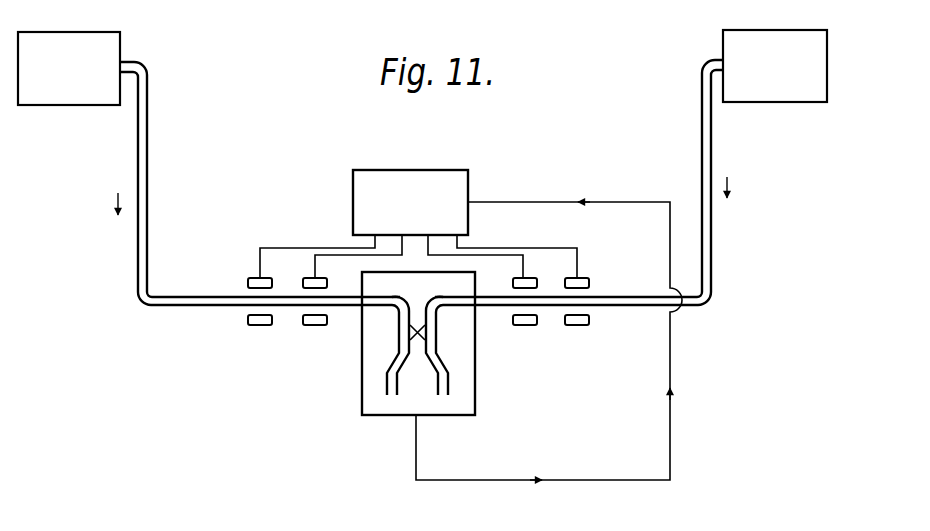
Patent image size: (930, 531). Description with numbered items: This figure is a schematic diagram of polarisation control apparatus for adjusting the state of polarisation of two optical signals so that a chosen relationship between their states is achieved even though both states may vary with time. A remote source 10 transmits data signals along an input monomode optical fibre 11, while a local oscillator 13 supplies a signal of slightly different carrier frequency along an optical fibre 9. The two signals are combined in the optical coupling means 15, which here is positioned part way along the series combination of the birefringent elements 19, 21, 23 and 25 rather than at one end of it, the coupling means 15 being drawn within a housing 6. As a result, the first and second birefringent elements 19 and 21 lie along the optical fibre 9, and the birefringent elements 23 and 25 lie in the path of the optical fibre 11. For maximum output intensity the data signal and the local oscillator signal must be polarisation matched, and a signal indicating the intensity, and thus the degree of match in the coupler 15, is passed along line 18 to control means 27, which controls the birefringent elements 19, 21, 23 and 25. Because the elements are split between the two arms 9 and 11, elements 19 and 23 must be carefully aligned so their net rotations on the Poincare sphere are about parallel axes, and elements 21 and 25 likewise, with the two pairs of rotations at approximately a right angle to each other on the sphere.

The remote source 10 is at (60, 31).
The local oscillator 13 is at (797, 104).
The input monomode optical fibre 11 is at (138, 271).
The optical fibre 9 is at (712, 258).
The control means 27 is at (405, 170).
The line 18 is at (673, 413).
The housing 6 is at (362, 405).
The optical coupling means 15 is at (437, 346).
The birefringent element 25 is at (262, 327).
The birefringent element 23 is at (313, 327).
The birefringent element 21 is at (530, 327).
The birefringent element 19 is at (572, 327).